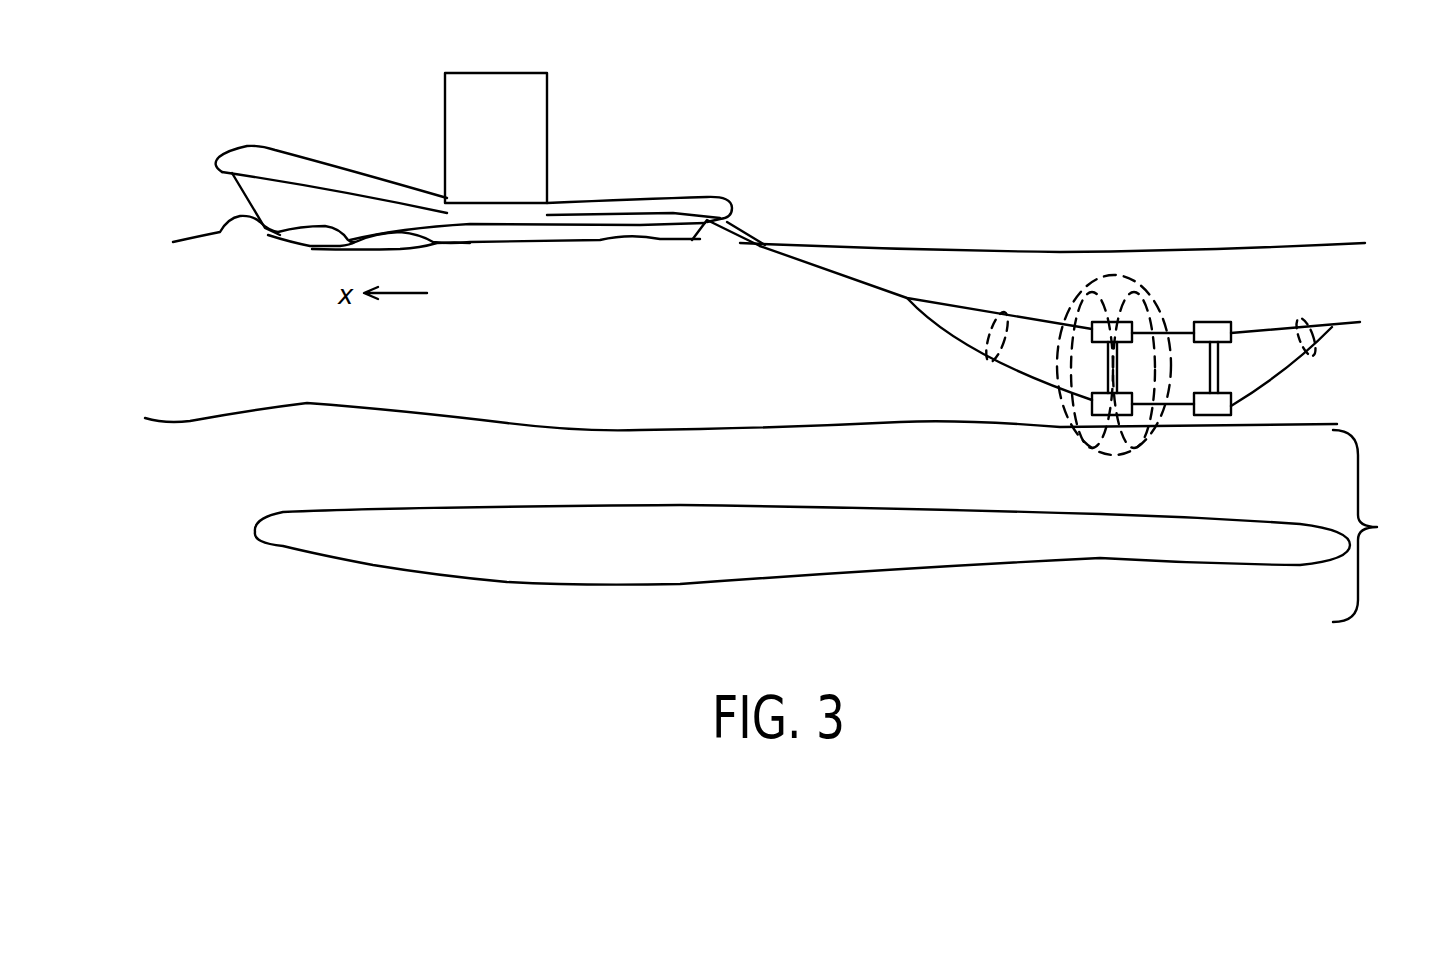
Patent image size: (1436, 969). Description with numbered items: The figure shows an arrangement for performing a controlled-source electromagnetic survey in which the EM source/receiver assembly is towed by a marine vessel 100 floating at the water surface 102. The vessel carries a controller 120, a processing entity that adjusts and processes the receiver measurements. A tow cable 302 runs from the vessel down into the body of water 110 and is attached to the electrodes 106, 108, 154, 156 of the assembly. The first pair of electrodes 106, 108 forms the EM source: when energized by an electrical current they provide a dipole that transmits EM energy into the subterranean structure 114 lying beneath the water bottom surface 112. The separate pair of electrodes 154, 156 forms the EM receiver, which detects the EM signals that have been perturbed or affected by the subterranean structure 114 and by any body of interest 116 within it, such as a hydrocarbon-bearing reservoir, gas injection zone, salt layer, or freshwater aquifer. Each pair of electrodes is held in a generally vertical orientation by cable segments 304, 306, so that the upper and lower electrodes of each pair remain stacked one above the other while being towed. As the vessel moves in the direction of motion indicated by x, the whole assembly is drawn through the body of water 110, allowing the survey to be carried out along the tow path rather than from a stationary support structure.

The marine vessel 100 is at (735, 186).
The water surface 102 is at (1180, 250).
The electrode 106 is at (1135, 325).
The electrode 108 is at (1135, 410).
The body of water 110 is at (614, 338).
The water bottom surface 112 is at (650, 430).
The subterranean structure 114 is at (1380, 526).
The body of interest 116 is at (865, 558).
The controller 120 is at (547, 118).
The electrode 154 is at (1235, 325).
The electrode 156 is at (1231, 410).
The tow cable 302 is at (830, 272).
The cable segment 304 is at (988, 355).
The cable segment 306 is at (1323, 360).